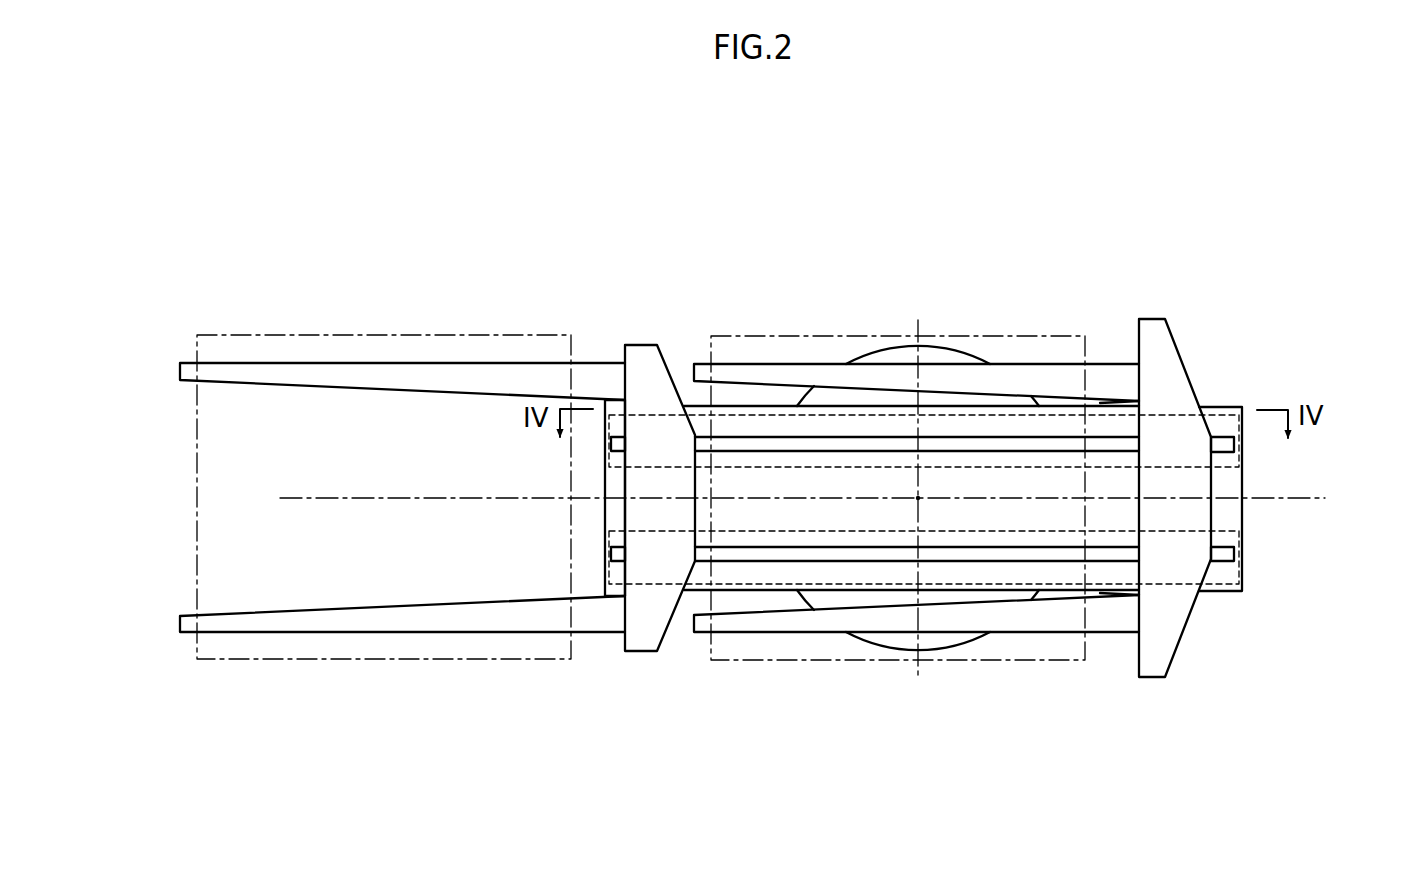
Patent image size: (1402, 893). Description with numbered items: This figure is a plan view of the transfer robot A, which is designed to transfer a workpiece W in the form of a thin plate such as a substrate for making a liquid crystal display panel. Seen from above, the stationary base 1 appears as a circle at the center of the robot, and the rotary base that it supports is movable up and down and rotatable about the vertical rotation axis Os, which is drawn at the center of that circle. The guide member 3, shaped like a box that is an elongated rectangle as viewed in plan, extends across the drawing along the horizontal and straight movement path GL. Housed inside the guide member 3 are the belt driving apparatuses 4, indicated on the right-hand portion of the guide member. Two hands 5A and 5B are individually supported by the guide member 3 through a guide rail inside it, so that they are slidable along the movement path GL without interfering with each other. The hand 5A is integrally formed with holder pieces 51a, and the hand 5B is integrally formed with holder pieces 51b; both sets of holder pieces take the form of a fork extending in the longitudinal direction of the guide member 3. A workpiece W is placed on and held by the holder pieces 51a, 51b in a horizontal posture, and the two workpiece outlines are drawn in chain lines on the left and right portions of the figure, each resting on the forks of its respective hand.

The stationary base 1 is at (863, 352).
The guide member 3 is at (1228, 403).
The belt driving apparatus 4 is at (1107, 413).
The hand 5A is at (650, 428).
The hand 5B is at (1190, 513).
The holder pieces 51a is at (397, 363).
The holder pieces 51b is at (745, 372).
The transfer robot A is at (780, 263).
The workpiece W is at (203, 335).
The movement path GL is at (1322, 498).
The rotation axis Os is at (918, 498).